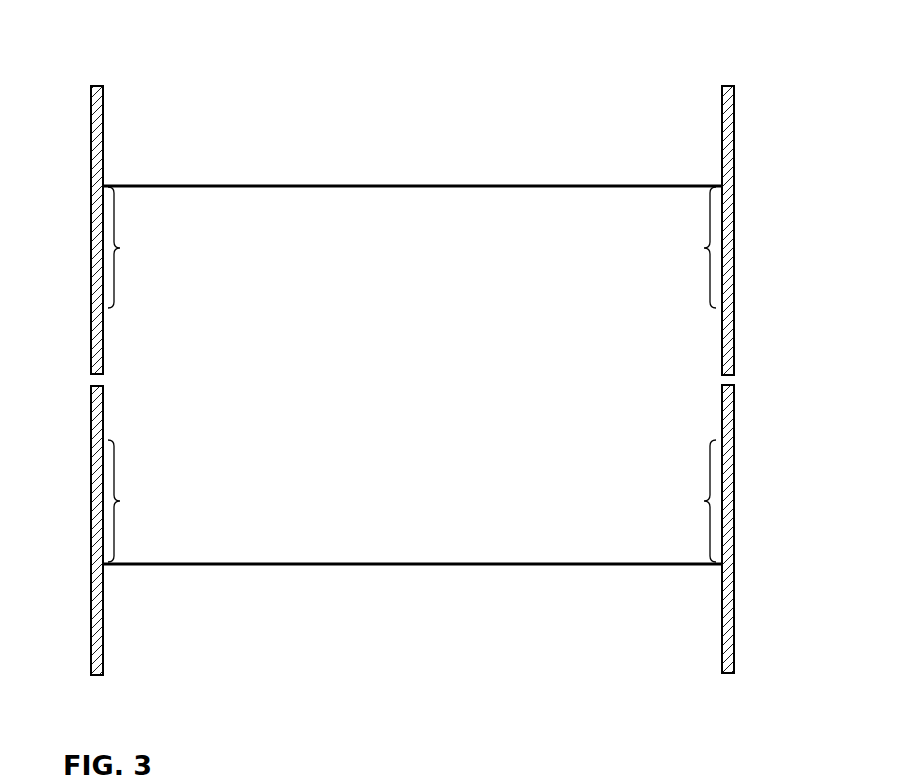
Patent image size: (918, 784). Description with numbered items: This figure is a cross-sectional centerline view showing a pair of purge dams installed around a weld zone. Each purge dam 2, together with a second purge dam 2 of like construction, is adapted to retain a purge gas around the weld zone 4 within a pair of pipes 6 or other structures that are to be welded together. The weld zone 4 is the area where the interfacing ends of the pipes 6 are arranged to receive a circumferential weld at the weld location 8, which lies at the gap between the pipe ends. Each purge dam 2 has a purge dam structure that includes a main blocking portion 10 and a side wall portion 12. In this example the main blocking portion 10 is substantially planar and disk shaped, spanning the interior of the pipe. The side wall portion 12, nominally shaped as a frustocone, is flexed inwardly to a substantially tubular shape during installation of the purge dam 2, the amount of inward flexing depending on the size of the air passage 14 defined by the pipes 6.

The purge dam 2 is at (412, 377).
The weld zone 4 is at (390, 379).
The pipes 6 is at (734, 103).
The weld location 8 is at (740, 376).
The main blocking portion 10 is at (400, 188).
The side wall portion 12 is at (412, 374).
The air passage 14 is at (393, 143).